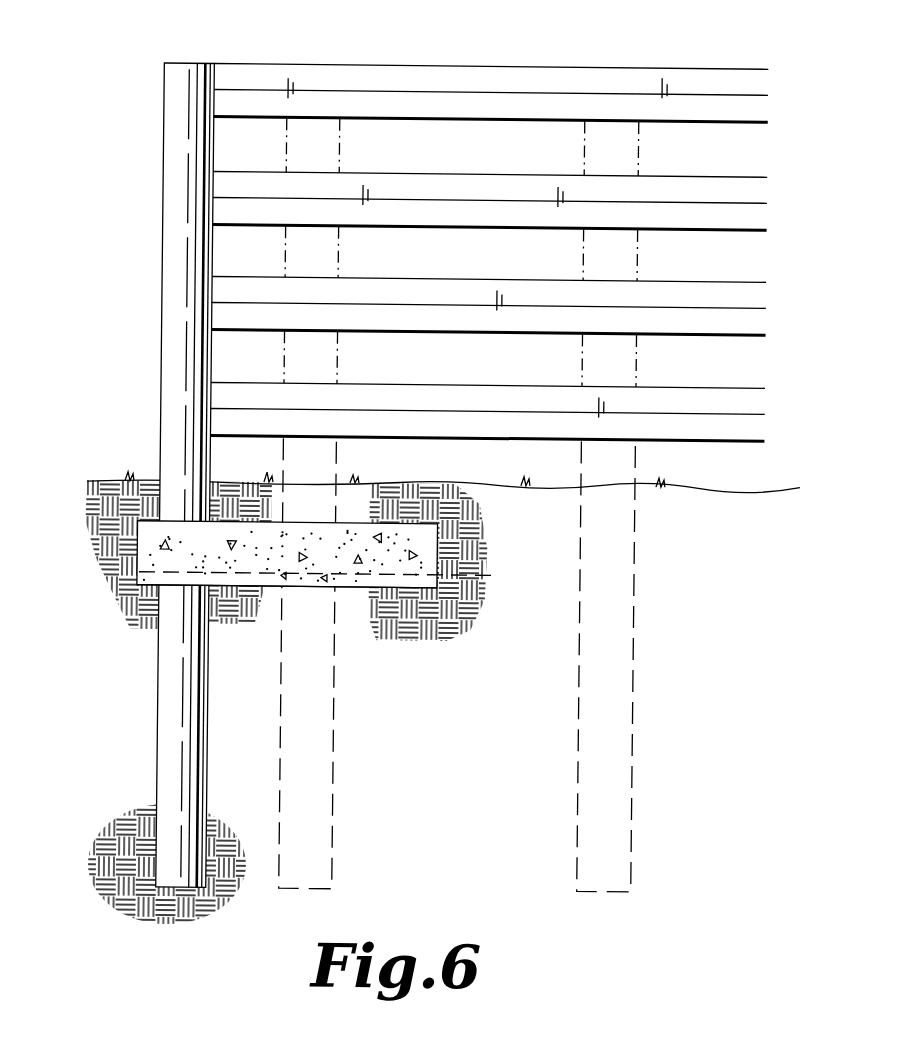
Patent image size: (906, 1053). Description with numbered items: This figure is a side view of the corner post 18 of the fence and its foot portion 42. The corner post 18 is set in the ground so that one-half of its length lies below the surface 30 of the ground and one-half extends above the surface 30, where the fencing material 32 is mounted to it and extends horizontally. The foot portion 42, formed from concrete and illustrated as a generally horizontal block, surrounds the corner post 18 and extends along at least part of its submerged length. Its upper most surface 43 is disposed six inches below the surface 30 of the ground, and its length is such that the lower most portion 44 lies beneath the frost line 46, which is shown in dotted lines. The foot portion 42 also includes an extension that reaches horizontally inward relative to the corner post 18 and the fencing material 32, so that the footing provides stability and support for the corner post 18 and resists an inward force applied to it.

The corner post 18 is at (182, 112).
The fencing material 32 is at (452, 192).
The surface of the ground 30 is at (98, 482).
The upper most surface 43 is at (277, 524).
The foot portion 42 is at (375, 558).
The lower most portion 44 is at (303, 592).
The frost line 46 is at (175, 575).